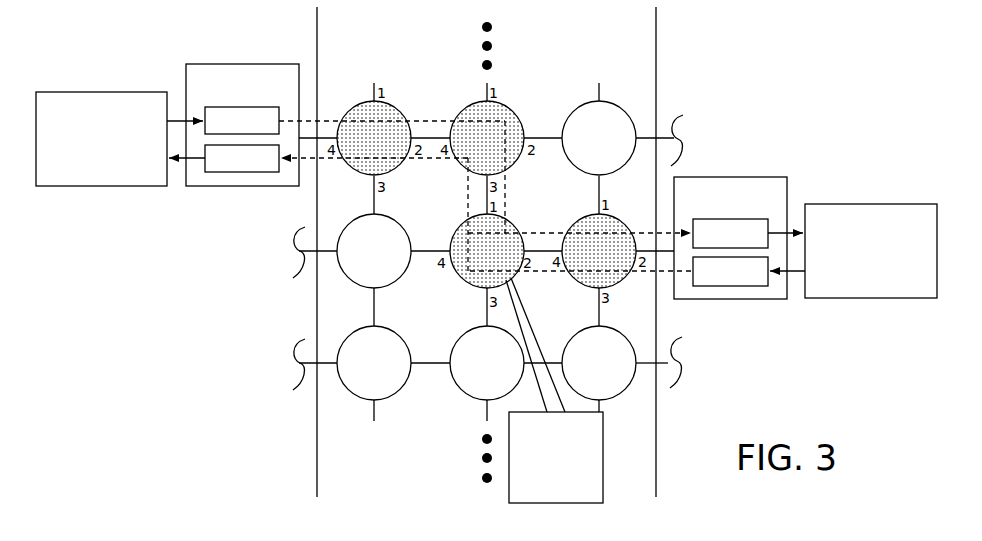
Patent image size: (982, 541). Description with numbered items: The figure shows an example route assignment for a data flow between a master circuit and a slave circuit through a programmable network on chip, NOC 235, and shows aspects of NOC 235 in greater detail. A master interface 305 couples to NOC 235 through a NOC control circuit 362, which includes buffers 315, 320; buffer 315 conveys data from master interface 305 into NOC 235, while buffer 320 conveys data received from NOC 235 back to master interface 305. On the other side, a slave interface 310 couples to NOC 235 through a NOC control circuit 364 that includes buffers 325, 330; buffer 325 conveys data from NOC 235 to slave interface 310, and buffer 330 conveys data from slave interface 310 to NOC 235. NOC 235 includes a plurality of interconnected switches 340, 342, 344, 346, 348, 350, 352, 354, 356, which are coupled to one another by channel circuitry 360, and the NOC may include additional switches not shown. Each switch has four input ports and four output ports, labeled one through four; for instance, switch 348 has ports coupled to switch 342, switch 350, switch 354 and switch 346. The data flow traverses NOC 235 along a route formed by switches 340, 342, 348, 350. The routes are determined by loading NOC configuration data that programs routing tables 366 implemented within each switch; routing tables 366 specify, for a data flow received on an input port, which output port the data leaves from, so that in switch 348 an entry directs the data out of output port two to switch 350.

The NOC 235 is at (486, 252).
The master interface 305 is at (101, 139).
The slave interface 310 is at (871, 251).
The buffer 315 is at (223, 120).
The buffer 320 is at (224, 158).
The buffer 325 is at (748, 233).
The buffer 330 is at (749, 271).
The switch 340 is at (374, 138).
The switch 342 is at (487, 138).
The switch 344 is at (599, 138).
The switch 346 is at (374, 251).
The switch 348 is at (487, 251).
The switch 350 is at (599, 251).
The switch 352 is at (374, 363).
The switch 354 is at (487, 363).
The switch 356 is at (599, 363).
The channel circuitry 360 is at (597, 185).
The NOC control circuit 362 is at (242, 125).
The NOC control circuit 364 is at (730, 238).
The routing tables 366 is at (554, 390).